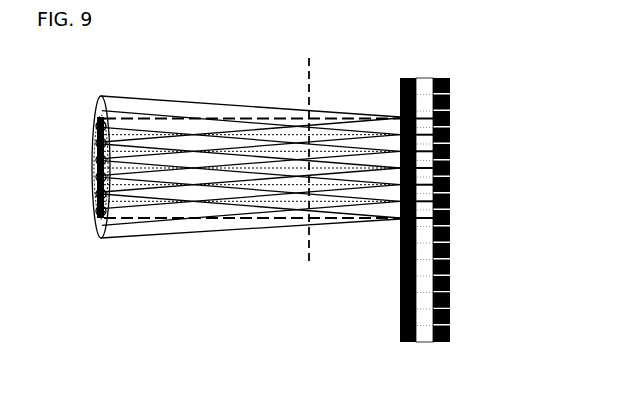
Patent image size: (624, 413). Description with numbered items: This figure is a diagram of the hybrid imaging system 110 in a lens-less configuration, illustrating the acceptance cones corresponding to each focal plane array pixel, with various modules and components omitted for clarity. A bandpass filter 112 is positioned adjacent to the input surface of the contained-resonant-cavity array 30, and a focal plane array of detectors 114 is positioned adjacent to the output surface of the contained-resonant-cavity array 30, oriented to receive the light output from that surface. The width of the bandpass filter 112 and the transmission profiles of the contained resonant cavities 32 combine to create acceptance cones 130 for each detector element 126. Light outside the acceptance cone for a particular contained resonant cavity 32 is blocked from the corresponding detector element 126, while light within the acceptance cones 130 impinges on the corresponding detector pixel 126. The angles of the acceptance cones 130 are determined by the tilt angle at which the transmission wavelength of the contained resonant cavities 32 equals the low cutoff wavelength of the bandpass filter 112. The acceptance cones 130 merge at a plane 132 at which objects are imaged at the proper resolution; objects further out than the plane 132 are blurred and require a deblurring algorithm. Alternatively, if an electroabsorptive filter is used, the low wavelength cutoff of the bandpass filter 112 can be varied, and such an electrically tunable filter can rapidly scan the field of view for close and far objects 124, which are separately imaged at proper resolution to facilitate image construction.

The imaging system 110 is at (548, 68).
The bandpass filter 112 is at (405, 78).
The focal plane array of detectors 114 is at (442, 70).
The object 124 is at (92, 162).
The detector pixel 126 is at (446, 297).
The acceptance cones 130 is at (150, 109).
The plane 132 is at (308, 259).
The contained-resonant-cavity array 30 is at (425, 71).
The contained resonant cavities 32 is at (400, 262).